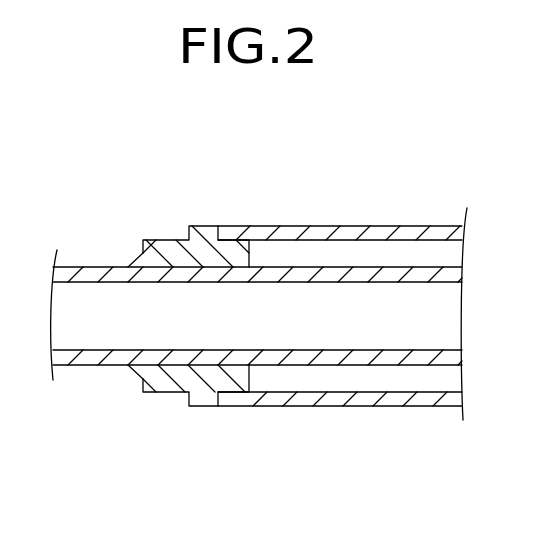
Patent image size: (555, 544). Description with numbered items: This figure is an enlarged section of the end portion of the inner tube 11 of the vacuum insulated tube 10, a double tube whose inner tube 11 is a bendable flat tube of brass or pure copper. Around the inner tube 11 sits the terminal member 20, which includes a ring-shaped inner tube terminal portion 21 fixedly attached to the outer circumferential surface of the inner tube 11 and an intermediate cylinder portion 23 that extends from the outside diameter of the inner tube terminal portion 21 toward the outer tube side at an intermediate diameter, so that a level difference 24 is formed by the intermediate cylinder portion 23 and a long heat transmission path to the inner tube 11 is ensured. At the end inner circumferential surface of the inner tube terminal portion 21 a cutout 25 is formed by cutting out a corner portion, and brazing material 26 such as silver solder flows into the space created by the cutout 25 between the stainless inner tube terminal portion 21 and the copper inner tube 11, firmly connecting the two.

The vacuum insulated tube 10 is at (271, 303).
The inner tube 11 is at (82, 267).
The terminal member 20 is at (271, 304).
The inner tube terminal portion 21 is at (168, 253).
The intermediate cylinder portion 23 is at (318, 231).
The level difference 24 is at (372, 407).
The cutout 25 is at (137, 375).
The brazing material 26 is at (138, 257).